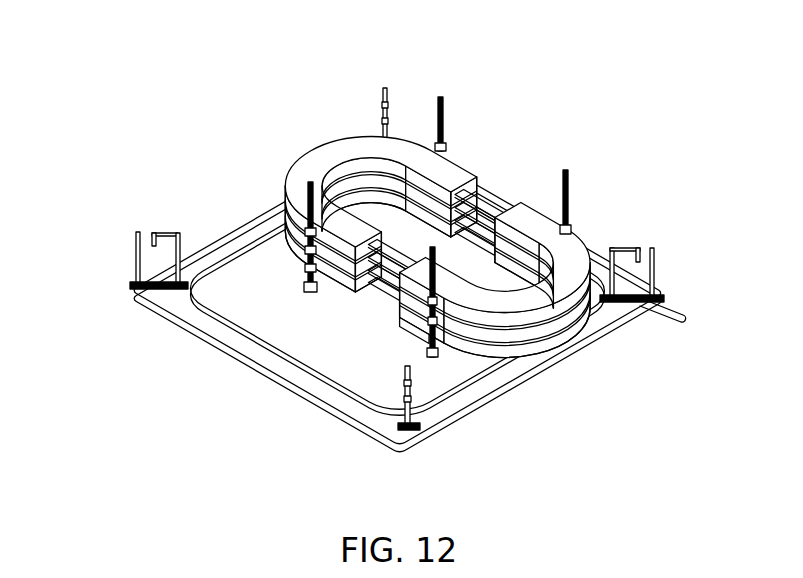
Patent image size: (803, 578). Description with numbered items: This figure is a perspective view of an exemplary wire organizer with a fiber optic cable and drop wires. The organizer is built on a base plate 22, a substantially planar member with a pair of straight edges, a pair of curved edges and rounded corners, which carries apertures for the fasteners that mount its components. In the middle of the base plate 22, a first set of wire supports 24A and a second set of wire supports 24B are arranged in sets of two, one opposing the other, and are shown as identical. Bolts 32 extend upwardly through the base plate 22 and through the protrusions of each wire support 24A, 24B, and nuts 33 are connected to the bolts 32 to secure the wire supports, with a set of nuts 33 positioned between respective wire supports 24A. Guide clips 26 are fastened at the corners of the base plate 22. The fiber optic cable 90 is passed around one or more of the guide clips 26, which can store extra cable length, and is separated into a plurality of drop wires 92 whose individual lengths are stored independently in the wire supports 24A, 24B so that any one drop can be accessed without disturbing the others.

The base plate 22 is at (284, 393).
The first set of wire supports 24A is at (342, 150).
The second set of wire supports 24B is at (578, 240).
The guide clip 26 is at (388, 92).
The bolt 32 is at (290, 197).
The nut 33 is at (448, 332).
The fiber optic cable 90 is at (672, 320).
The drop wires 92 is at (480, 196).